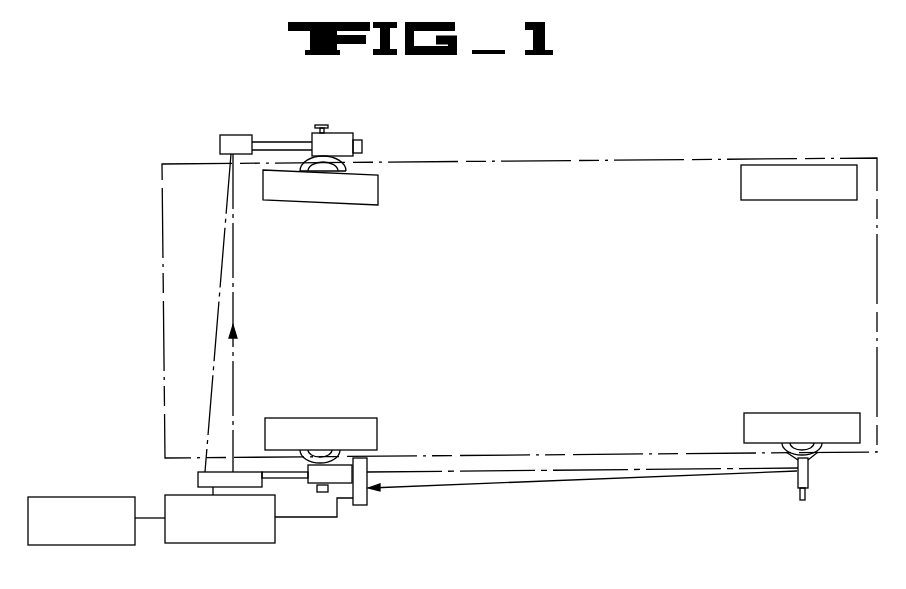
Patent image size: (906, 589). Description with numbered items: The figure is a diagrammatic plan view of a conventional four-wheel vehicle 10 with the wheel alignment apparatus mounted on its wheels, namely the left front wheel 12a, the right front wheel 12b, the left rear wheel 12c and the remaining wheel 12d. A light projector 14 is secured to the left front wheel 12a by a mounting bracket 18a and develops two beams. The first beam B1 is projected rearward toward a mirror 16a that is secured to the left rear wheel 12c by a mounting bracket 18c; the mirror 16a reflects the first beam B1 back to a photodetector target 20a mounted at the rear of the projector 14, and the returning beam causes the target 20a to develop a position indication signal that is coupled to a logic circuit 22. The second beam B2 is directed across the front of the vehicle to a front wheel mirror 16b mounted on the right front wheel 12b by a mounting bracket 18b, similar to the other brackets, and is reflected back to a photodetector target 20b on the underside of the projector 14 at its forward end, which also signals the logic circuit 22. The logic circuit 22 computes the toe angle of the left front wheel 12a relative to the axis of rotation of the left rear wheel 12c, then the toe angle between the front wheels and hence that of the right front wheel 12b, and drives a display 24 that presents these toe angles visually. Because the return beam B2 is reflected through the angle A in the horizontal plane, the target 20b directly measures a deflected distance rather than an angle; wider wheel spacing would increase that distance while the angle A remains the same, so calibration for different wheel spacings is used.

The vehicle 10 is at (600, 152).
The left front wheel 12a is at (377, 422).
The right front wheel 12b is at (370, 197).
The left rear wheel 12c is at (744, 427).
The wheel 12d is at (741, 187).
The light projector 14 is at (300, 484).
The mirror 16a is at (798, 476).
The front wheel mirror 16b is at (220, 142).
The mounting bracket 18a is at (318, 452).
The mounting bracket 18b is at (345, 168).
The mounting bracket 18c is at (813, 457).
The photodetector target 20a is at (367, 500).
The photodetector target 20b is at (198, 480).
The logic circuit 22 is at (213, 545).
The display 24 is at (75, 547).
The angle A is at (230, 223).
The first beam B1 is at (532, 472).
The second beam B2 is at (235, 268).